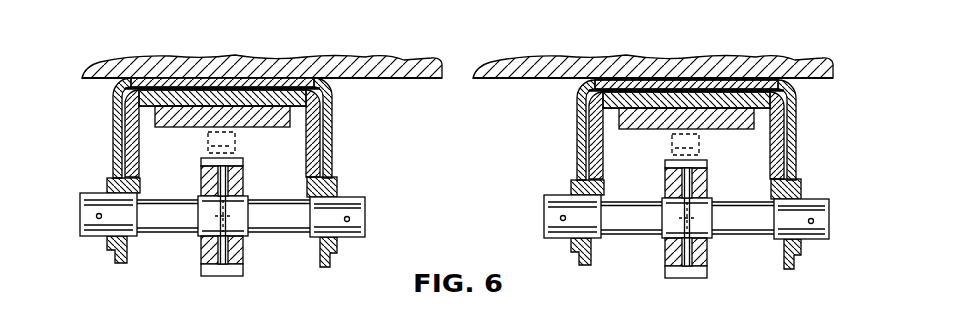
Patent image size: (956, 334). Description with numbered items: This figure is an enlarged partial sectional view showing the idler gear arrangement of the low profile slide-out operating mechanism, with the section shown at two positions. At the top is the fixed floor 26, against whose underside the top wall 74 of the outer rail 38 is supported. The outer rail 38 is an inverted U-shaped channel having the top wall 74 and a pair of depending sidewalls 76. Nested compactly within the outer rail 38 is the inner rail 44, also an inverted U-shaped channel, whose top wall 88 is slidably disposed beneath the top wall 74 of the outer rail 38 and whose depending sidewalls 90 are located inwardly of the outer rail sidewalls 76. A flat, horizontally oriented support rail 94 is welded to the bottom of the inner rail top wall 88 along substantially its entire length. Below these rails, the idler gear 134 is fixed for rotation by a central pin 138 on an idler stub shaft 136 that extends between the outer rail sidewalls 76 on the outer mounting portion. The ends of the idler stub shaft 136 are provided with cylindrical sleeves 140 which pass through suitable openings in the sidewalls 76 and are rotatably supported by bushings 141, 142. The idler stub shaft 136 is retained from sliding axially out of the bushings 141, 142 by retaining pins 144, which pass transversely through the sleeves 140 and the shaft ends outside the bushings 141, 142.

The fixed floor 26 is at (283, 63).
The outer rail 38 is at (305, 73).
The inner rail 44 is at (220, 100).
The top wall 74 is at (257, 82).
The depending sidewalls 76 is at (113, 107).
The top wall 88 is at (178, 96).
The depending sidewalls 90 is at (131, 128).
The support rail 94 is at (183, 122).
The idler gear 134 is at (205, 252).
The idler stub shaft 136 is at (270, 223).
The central pin 138 is at (226, 266).
The cylindrical sleeves 140 is at (103, 232).
The bushing 141 is at (110, 190).
The bushing 142 is at (337, 183).
The retaining pins 144 is at (95, 217).